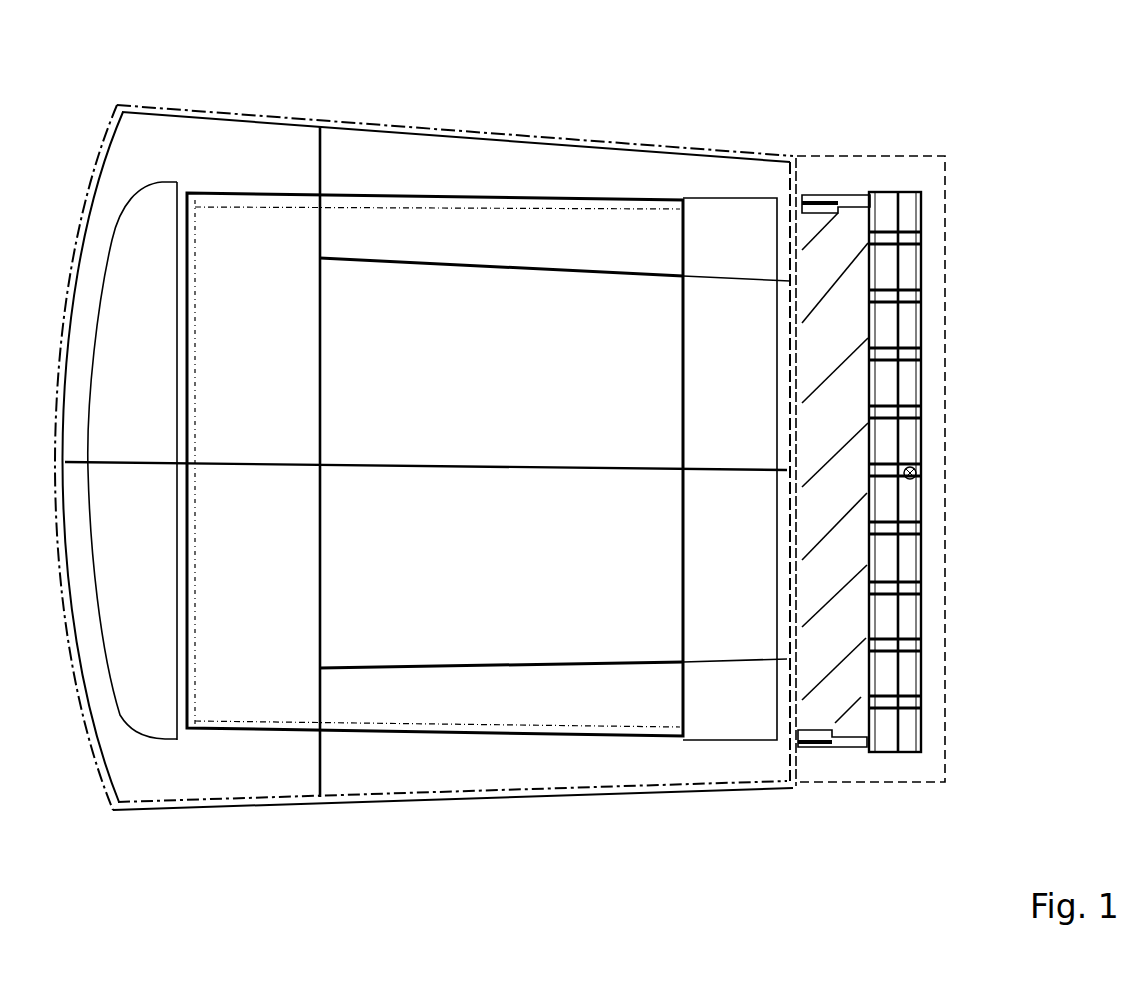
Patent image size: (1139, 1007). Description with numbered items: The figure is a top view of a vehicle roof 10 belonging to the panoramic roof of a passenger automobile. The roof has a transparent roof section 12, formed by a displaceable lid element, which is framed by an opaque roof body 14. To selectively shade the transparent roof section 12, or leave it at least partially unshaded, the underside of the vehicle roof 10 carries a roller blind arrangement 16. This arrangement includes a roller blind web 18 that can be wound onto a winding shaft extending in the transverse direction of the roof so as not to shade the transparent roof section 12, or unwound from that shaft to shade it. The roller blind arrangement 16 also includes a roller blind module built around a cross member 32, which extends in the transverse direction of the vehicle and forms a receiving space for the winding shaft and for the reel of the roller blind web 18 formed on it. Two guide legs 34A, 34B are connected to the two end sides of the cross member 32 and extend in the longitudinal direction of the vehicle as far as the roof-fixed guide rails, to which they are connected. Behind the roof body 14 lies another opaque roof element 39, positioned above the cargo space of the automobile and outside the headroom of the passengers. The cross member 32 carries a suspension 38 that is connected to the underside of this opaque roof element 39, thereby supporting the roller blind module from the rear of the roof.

The vehicle roof 10 is at (897, 131).
The transparent roof section 12 is at (456, 413).
The roof body 14 is at (215, 137).
The roller blind arrangement 16 is at (921, 453).
The roller blind web 18 is at (848, 570).
The cross member 32 is at (910, 322).
The guide leg 34A is at (823, 742).
The guide leg 34B is at (827, 197).
The suspension 38 is at (918, 483).
The opaque roof element 39 is at (922, 180).